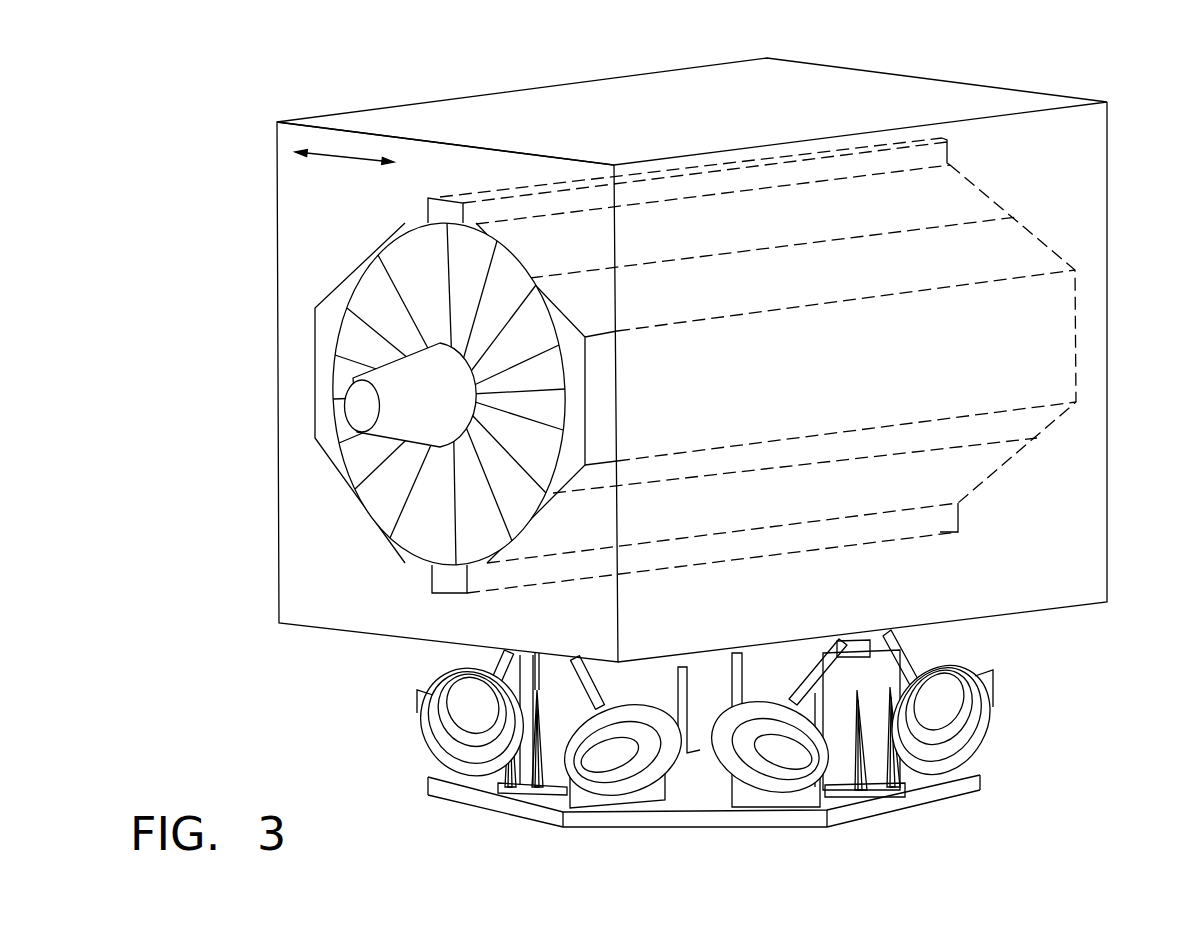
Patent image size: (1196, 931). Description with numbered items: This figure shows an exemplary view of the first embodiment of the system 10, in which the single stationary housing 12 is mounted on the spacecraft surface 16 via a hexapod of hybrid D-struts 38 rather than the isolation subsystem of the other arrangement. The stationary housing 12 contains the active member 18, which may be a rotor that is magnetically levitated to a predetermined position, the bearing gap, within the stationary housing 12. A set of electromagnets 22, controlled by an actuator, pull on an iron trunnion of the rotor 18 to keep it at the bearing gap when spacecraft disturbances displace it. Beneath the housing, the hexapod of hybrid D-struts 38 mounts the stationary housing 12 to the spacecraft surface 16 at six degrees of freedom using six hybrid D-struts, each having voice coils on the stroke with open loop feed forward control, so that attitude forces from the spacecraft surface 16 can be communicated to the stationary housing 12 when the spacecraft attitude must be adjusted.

The system 10 is at (238, 118).
The stationary housing 12 is at (1109, 541).
The spacecraft surface 16 is at (975, 787).
The active member 18 is at (1058, 253).
The electromagnets 22 is at (432, 211).
The hexapod of hybrid D-struts 38 is at (1058, 681).